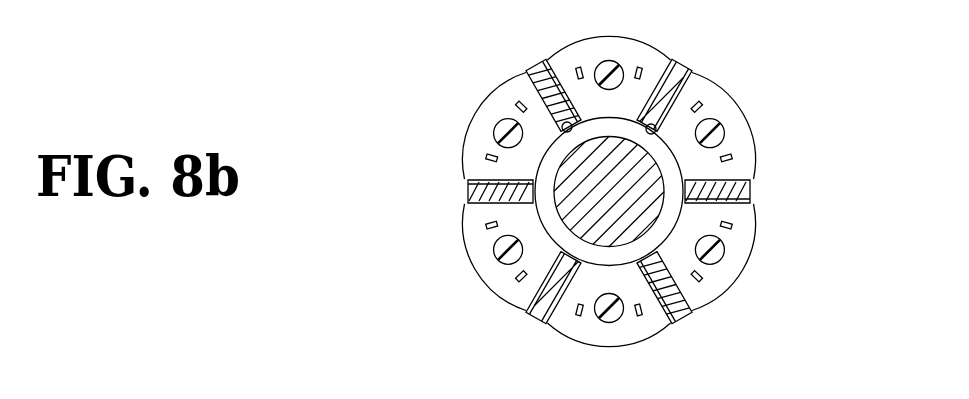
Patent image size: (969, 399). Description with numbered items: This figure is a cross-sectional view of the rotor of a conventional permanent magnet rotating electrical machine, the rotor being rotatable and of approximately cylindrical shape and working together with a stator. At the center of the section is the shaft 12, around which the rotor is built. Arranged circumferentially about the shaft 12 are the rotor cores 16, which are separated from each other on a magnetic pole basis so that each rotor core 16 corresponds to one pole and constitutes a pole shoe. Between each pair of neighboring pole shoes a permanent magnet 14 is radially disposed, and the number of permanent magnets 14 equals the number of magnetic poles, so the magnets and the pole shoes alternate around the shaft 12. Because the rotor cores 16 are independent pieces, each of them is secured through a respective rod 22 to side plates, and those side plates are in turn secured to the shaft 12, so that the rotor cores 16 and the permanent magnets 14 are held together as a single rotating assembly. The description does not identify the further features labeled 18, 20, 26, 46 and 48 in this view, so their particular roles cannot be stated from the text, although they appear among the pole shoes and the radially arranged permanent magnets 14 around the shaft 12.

The shaft 12 is at (518, 313).
The permanent magnets 14 is at (740, 191).
The rotor cores 16 is at (744, 102).
The bridge / joint 18 is at (547, 58).
The pole hole 20 is at (495, 120).
The rods 22 is at (490, 140).
The pole piece 26 is at (720, 87).
The pin 46 is at (544, 62).
The pole shoe 48 is at (493, 82).